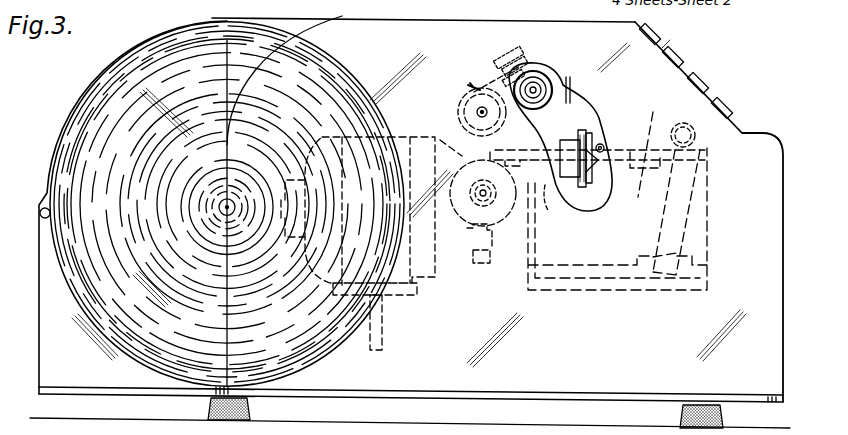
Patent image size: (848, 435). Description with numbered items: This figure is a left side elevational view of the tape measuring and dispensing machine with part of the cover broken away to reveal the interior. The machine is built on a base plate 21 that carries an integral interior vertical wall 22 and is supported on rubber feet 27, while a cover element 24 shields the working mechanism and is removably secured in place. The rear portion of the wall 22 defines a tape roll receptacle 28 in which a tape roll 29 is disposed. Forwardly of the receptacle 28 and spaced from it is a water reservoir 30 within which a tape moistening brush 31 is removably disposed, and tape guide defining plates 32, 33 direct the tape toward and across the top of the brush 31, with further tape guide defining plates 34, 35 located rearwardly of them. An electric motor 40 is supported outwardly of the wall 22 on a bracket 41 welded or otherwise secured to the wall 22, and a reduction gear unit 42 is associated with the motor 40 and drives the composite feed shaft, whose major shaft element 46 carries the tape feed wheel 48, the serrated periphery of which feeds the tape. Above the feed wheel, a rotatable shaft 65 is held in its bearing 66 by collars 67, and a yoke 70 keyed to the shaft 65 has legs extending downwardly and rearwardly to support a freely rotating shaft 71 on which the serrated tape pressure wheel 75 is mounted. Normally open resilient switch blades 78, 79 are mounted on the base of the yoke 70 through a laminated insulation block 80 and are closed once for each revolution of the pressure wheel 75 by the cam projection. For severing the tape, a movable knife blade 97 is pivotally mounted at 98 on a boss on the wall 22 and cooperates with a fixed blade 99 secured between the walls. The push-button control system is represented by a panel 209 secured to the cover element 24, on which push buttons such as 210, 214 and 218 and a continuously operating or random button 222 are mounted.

The base plate 21 is at (557, 379).
The vertical wall 22 is at (180, 40).
The cover element 24 is at (292, 17).
The rubber feet 27 is at (209, 408).
The tape roll receptacle 28 is at (92, 120).
The tape roll 29 is at (100, 85).
The water reservoir 30 is at (706, 236).
The tape moistening brush 31 is at (706, 172).
The tape guide defining plate 32 is at (642, 142).
The tape guide defining plate 33 is at (666, 193).
The tape guide defining plate 34 is at (565, 140).
The tape guide defining plate 35 is at (548, 188).
The electric motor 40 is at (322, 137).
The bracket 41 is at (386, 310).
The reduction gear unit 42 is at (488, 266).
The major shaft element 46 is at (481, 201).
The tape feed wheel 48 is at (471, 233).
The rotatable shaft 65 is at (546, 75).
The bearing 66 is at (549, 88).
The collars 67 is at (560, 96).
The yoke 70 is at (467, 122).
The shaft 71 is at (477, 112).
The tape pressure wheel 75 is at (459, 97).
The switch blade 78 is at (490, 80).
The switch blade 79 is at (478, 88).
The laminated insulation block 80 is at (530, 52).
The knife blade 97 is at (596, 150).
The pivot 98 is at (600, 184).
The fixed blade 99 is at (583, 131).
The panel 209 is at (676, 42).
The push button 210 is at (684, 54).
The push button 214 is at (708, 81).
The push button 218 is at (731, 104).
The random button 222 is at (660, 29).